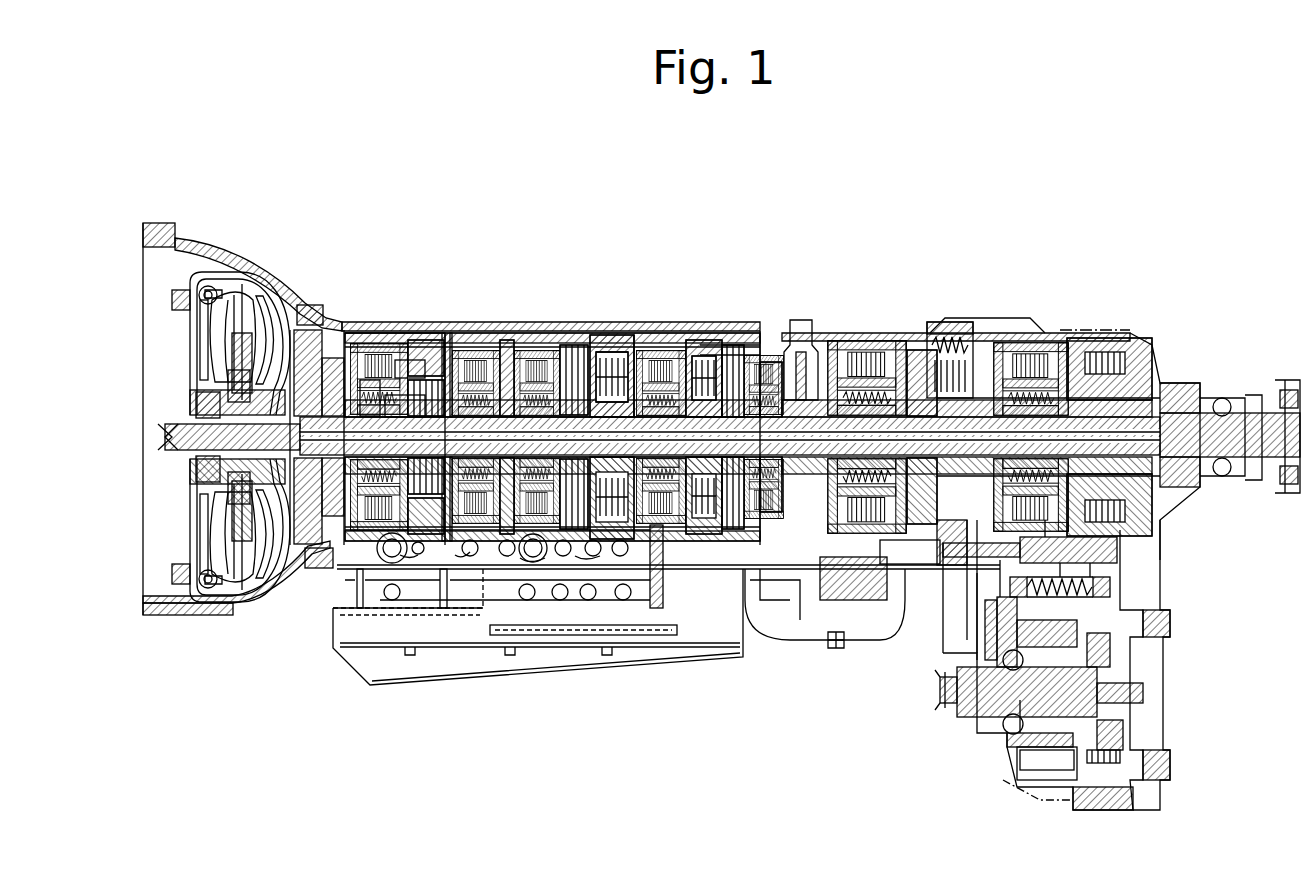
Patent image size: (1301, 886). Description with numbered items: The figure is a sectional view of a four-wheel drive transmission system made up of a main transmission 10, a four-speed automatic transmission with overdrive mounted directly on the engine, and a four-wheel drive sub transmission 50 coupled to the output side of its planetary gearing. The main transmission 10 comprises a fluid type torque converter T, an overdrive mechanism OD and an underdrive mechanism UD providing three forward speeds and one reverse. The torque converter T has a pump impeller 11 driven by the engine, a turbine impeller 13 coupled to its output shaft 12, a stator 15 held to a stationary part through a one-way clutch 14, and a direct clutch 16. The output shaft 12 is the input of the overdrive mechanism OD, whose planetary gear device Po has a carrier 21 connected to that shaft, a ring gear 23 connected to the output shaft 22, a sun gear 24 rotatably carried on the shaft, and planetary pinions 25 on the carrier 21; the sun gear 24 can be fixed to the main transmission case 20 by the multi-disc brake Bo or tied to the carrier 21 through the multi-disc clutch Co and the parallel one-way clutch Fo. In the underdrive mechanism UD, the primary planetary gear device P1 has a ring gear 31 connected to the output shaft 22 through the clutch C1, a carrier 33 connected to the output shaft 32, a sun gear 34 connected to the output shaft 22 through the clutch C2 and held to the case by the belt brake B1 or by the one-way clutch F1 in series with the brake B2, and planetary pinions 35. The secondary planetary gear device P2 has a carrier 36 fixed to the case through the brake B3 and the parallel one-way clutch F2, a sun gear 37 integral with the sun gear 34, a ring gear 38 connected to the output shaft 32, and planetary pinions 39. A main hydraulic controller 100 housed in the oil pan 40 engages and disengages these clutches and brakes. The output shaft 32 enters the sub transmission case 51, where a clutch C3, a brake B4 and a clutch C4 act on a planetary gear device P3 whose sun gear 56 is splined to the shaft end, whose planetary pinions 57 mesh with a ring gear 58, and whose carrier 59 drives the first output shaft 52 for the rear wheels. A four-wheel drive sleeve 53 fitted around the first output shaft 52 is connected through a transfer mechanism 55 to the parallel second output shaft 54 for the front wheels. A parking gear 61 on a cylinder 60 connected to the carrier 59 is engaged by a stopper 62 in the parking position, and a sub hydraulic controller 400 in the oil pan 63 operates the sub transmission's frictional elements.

The main transmission 10 is at (290, 228).
The pump impeller 11 is at (254, 300).
The output shaft of the torque converter 12 is at (258, 592).
The turbine impeller 13 is at (213, 282).
The one-way clutch 14 is at (212, 593).
The stator 15 is at (232, 590).
The direct clutch 16 is at (167, 232).
The torque converter T is at (186, 598).
The overdrive mechanism OD is at (318, 302).
The underdrive mechanism UD is at (502, 326).
The planetary gear device Po is at (322, 290).
The primary planetary gear device P1 is at (556, 340).
The secondary planetary gear device P2 is at (672, 342).
The planetary gear device P3 is at (916, 534).
The multi-disc clutch Co is at (348, 520).
The multi-disc brake Bo is at (376, 526).
The one-way clutch Fo is at (378, 524).
The multi-disc clutch C1 is at (522, 526).
The multi-disc clutch C2 is at (462, 526).
The clutch C3 is at (874, 338).
The clutch C4 is at (1027, 340).
The belt brake B1 is at (492, 530).
The multi-disc brake B2 is at (604, 524).
The multi-disc brake B3 is at (660, 524).
The brake B4 is at (938, 326).
The one-way clutch F1 is at (556, 528).
The one-way clutch F2 is at (628, 524).
The main transmission case 20 is at (620, 340).
The carrier 21 is at (386, 345).
The output shaft of the overdrive mechanism 22 is at (446, 338).
The ring gear 23 is at (415, 360).
The sun gear 24 is at (358, 320).
The planetary pinions 25 is at (401, 365).
The ring gear 31 is at (576, 346).
The output shaft 32 is at (751, 540).
The carrier 33 is at (586, 336).
The sun gear 34 is at (596, 340).
The planetary pinions 35 is at (576, 340).
The carrier 36 is at (716, 340).
The sun gear 37 is at (730, 340).
The ring gear 38 is at (688, 342).
The planetary pinions 39 is at (706, 340).
The oil pan 40 is at (406, 682).
The four-wheel drive sub transmission 50 is at (1110, 320).
The sub transmission case 51 is at (843, 330).
The first output shaft 52 is at (1178, 414).
The four-wheel drive sleeve 53 is at (1138, 382).
The second output shaft 54 is at (988, 690).
The transfer mechanism 55 is at (1122, 360).
The sun gear 56 is at (932, 524).
The planetary pinions 57 is at (942, 544).
The ring gear 58 is at (950, 544).
The carrier 59 is at (960, 544).
The cylinder 60 is at (822, 564).
The parking gear 61 is at (836, 604).
The stopper 62 is at (900, 556).
The oil pan 63 is at (782, 580).
The main hydraulic controller 100 is at (584, 612).
The sub hydraulic controller 400 is at (906, 538).